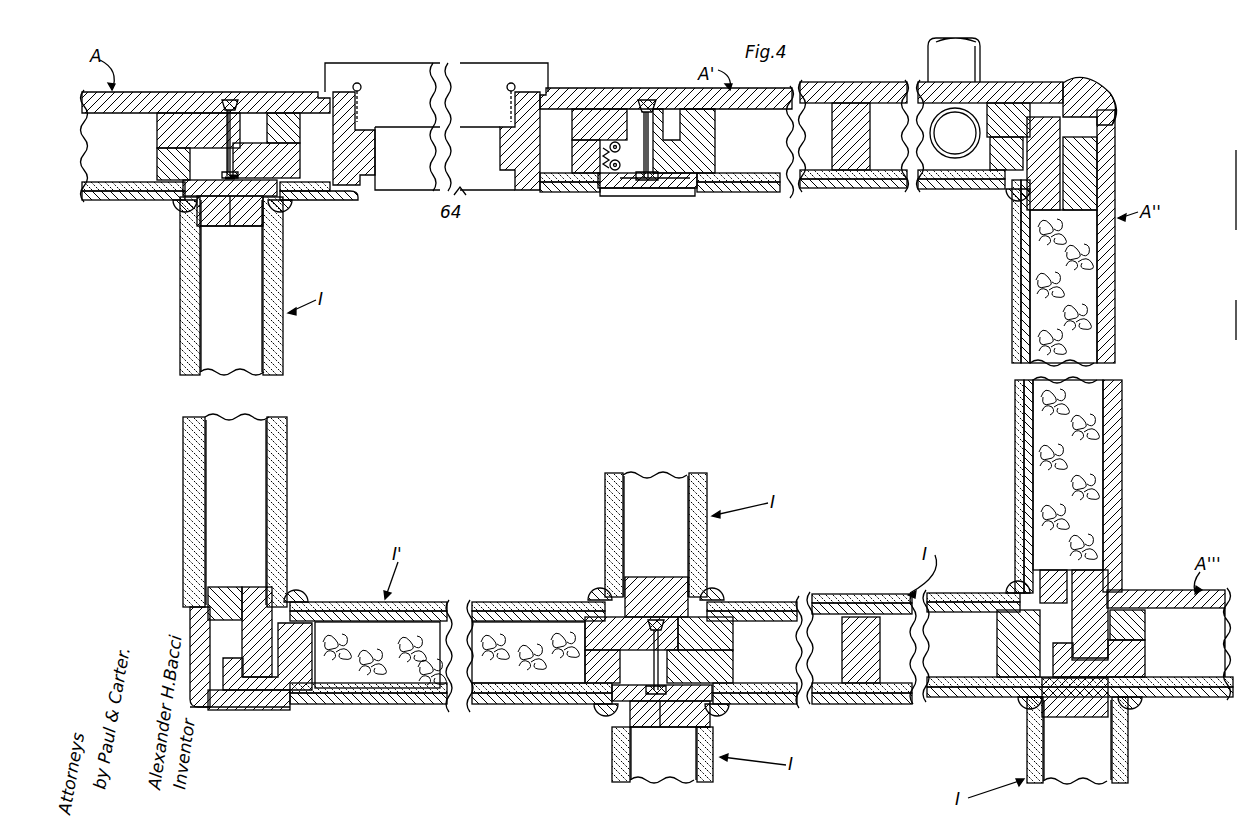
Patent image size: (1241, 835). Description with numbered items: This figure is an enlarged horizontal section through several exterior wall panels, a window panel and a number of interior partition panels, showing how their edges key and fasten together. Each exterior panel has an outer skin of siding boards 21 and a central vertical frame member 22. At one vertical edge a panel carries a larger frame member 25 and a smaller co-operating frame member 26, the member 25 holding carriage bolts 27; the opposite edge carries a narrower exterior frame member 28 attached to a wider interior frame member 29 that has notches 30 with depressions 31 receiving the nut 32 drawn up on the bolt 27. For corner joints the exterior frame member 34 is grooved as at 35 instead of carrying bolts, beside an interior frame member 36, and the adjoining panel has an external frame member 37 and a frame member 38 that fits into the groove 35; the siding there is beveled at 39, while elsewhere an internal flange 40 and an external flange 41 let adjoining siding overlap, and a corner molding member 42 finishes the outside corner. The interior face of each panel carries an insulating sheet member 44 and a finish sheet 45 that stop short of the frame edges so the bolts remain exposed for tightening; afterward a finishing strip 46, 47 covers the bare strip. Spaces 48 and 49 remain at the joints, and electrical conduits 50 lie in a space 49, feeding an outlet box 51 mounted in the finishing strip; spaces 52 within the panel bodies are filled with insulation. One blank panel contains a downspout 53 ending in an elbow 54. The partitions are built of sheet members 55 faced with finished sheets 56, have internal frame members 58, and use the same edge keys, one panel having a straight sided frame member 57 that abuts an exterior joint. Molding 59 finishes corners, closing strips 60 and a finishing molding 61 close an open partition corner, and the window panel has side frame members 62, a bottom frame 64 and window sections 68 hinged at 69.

The siding boards 21 is at (88, 96).
The central vertical frame member 22 is at (842, 136).
The frame member 25 is at (175, 122).
The co-operating frame member 26 is at (170, 170).
The bolts 27 is at (226, 108).
The exterior side frame member 28 is at (272, 122).
The interior side frame member 29 is at (250, 150).
The notches 30 is at (220, 215).
The depressions 31 is at (243, 215).
The nut 32 is at (232, 228).
The exterior frame member 34 is at (1010, 122).
The groove 35 is at (1050, 112).
The interior frame member 36 is at (1000, 165).
The external frame member 37 is at (1092, 188).
The frame member 38 is at (1056, 160).
The bevel 39 is at (1112, 580).
The internal flange 40 is at (228, 100).
The external flange 41 is at (235, 100).
The corner molding member 42 is at (1112, 118).
The sheet member 44 is at (100, 185).
The finish sheet 45 is at (110, 200).
The finishing strip outer section 46 is at (685, 190).
The finishing strip inner section 47 is at (660, 196).
The space 48 is at (690, 130).
The space 49 is at (605, 160).
The electrical conduits 50 is at (615, 142).
The outlet box 51 is at (642, 196).
The spaces 52 is at (135, 172).
The downspout 53 is at (956, 150).
The elbow 54 is at (946, 58).
The sheet members 55 is at (264, 338).
The finished material sheet 56 is at (184, 356).
The straight sided frame member 57 is at (252, 215).
The internal frame members 58 is at (858, 627).
The molding 59 is at (178, 212).
The closing strips 60 is at (195, 617).
The finishing molding 61 is at (205, 709).
The window side frame members 62 is at (345, 100).
The bottom window frame 64 is at (448, 129).
The window sections 68 is at (378, 97).
The hinge 69 is at (357, 83).